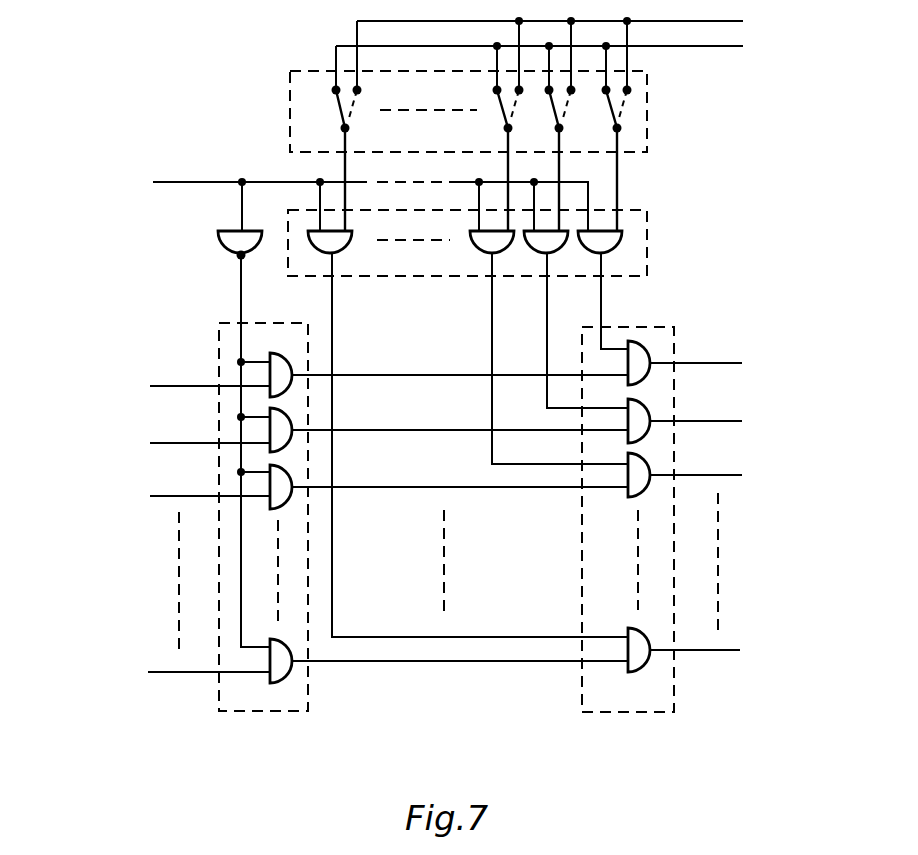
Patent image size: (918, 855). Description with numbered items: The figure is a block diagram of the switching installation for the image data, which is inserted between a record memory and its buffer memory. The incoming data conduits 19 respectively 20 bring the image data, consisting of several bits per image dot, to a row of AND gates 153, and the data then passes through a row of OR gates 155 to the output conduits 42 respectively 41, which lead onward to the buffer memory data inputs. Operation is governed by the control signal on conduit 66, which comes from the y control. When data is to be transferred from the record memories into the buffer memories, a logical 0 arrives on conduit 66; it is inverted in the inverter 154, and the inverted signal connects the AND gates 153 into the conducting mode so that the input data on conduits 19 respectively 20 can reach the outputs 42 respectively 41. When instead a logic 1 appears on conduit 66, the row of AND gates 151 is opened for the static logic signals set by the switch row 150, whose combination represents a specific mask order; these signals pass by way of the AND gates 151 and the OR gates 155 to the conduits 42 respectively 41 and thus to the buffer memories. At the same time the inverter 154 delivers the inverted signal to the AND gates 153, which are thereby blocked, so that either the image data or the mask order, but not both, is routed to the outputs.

The logic 1 is at (558, 50).
The logical 0 is at (547, 62).
The switch row 150 is at (633, 121).
The AND gates 151 is at (638, 247).
The AND gates 153 is at (293, 698).
The inverter 154 is at (217, 240).
The OR gates 155 is at (598, 697).
The conduit 66 is at (185, 181).
The incoming data conduit 19 is at (142, 688).
The incoming data conduit 20 is at (181, 529).
The output conduit 42 is at (748, 672).
The output conduit 41 is at (720, 506).